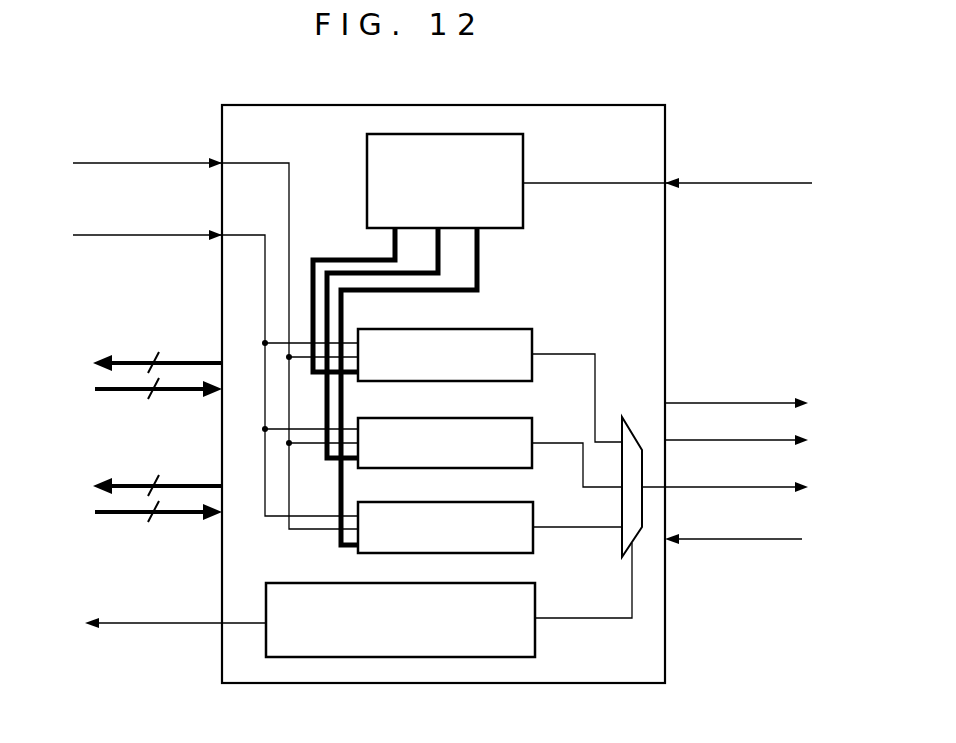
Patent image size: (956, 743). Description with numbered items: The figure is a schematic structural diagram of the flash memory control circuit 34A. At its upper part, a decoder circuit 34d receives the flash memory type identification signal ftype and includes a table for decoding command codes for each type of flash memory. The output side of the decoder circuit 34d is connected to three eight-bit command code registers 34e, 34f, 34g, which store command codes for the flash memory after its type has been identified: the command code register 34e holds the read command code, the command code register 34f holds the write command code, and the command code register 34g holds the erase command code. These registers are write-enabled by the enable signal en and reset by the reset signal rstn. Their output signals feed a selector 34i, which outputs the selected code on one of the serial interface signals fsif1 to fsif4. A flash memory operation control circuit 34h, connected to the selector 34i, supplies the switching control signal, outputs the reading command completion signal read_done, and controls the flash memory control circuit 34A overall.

The flash memory control circuit 34A is at (367, 105).
The decoder circuit 34d is at (523, 153).
The command code register 34e is at (532, 336).
The command code register 34f is at (532, 424).
The command code register 34g is at (533, 509).
The flash memory operation control circuit 34h is at (535, 591).
The selector 34i is at (627, 543).